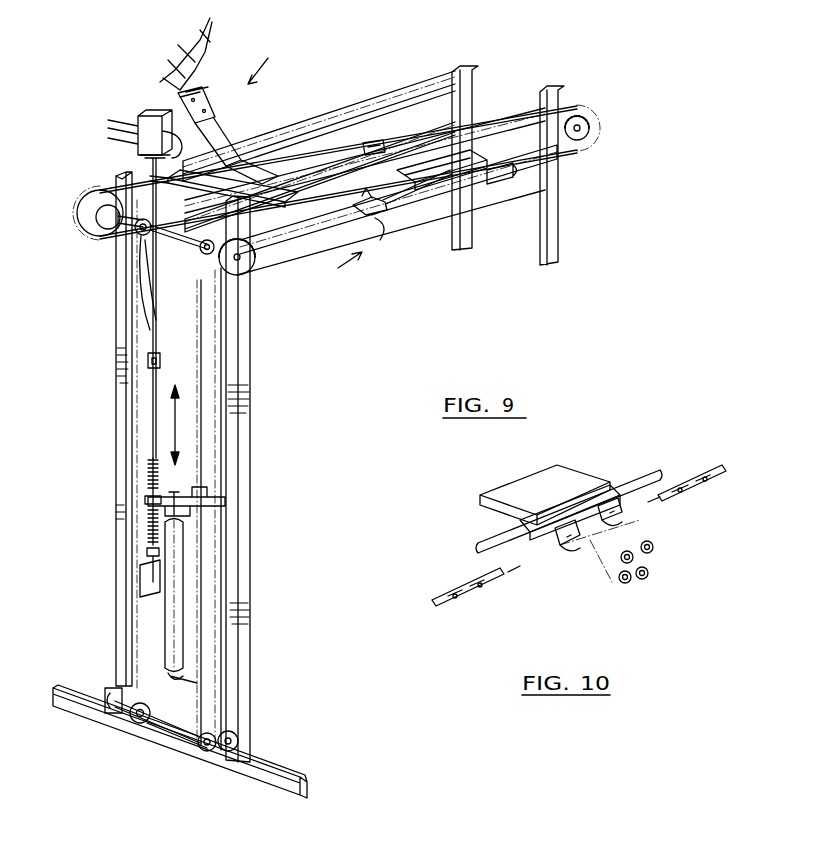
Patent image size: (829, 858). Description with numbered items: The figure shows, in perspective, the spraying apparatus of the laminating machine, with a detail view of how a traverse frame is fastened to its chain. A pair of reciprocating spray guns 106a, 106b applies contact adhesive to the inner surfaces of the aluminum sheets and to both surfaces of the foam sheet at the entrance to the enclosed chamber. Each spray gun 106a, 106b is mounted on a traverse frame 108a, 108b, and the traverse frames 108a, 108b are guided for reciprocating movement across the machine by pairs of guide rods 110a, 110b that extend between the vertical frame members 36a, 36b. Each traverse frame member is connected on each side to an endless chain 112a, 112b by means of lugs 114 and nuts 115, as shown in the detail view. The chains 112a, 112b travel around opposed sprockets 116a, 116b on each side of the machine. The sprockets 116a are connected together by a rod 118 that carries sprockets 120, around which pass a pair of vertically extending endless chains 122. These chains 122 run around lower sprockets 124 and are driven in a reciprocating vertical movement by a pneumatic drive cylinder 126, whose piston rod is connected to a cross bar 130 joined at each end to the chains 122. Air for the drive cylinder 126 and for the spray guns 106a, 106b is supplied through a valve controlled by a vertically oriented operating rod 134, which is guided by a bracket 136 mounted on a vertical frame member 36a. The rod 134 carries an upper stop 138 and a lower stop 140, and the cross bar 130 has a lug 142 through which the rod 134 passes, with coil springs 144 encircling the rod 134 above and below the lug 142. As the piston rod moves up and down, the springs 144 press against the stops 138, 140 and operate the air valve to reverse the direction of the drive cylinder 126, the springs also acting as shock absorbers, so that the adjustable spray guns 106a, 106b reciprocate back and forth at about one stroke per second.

In FIG. 9, the vertical frame member 36a is at (116, 405).
In FIG. 9, the vertical frame member 36b is at (558, 208).
In FIG. 9, the reciprocating spray gun 106a is at (273, 57).
In FIG. 9, the reciprocating spray gun 106b is at (323, 276).
In FIG. 9, the traverse frame 108a is at (270, 180).
In FIG. 9, the traverse frame 108b is at (440, 198).
In FIG. 9, the guide rods 110a is at (415, 85).
In FIG. 9, the guide rods 110b is at (462, 118).
In FIG. 9, the endless chain 112a is at (82, 198).
In FIG. 9, the endless chain 112b is at (572, 108).
In FIG. 10, the endless chain 112b is at (470, 600).
In FIG. 10, the lugs 114 is at (622, 510).
In FIG. 10, the nuts 115 is at (650, 552).
In FIG. 9, the sprockets 116a is at (95, 232).
In FIG. 9, the sprockets 116b is at (245, 270).
In FIG. 9, the rod 118 is at (150, 240).
In FIG. 9, the sprockets 120 is at (157, 265).
In FIG. 9, the vertically extending endless chains 122 is at (132, 270).
In FIG. 9, the lower sprockets 124 is at (207, 752).
In FIG. 9, the pneumatic drive cylinder 126 is at (184, 595).
In FIG. 9, the cross bar 130 is at (207, 497).
In FIG. 9, the operating rod 134 is at (147, 300).
In FIG. 9, the bracket 136 is at (140, 585).
In FIG. 9, the upper stop 138 is at (160, 358).
In FIG. 9, the lower stop 140 is at (147, 552).
In FIG. 9, the lug 142 is at (145, 499).
In FIG. 9, the coil springs 144 is at (148, 478).